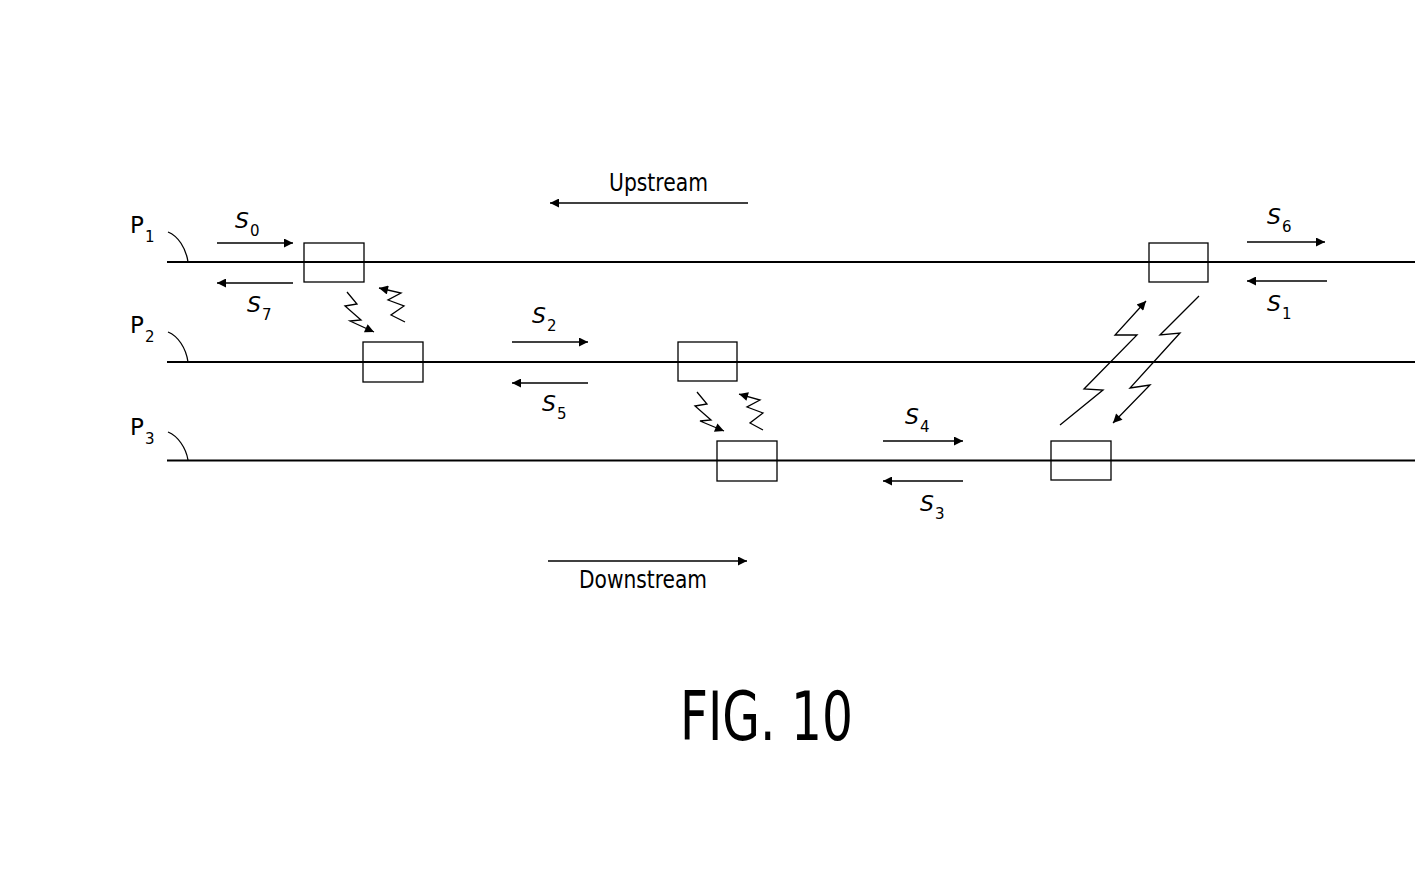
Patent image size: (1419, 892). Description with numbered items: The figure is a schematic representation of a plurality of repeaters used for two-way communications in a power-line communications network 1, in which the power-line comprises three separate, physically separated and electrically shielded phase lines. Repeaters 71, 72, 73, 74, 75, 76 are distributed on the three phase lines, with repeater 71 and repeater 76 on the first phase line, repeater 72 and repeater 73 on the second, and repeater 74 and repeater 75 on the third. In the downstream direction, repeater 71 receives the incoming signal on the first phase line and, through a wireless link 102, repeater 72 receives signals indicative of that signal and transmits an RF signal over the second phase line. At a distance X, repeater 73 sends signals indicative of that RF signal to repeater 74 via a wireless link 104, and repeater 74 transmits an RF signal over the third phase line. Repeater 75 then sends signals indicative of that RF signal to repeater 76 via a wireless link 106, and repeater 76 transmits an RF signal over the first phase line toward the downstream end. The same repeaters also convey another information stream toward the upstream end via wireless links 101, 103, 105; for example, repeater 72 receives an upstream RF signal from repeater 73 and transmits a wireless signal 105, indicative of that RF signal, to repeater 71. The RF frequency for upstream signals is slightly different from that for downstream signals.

The PLC network 1 is at (828, 157).
The repeater 71 is at (336, 243).
The repeater 72 is at (392, 382).
The repeater 73 is at (707, 342).
The repeater 74 is at (747, 481).
The repeater 75 is at (1100, 480).
The repeater 76 is at (1180, 243).
The wireless link 101 is at (1140, 388).
The wireless link 102 is at (352, 310).
The wireless link 103 is at (762, 412).
The wireless link 104 is at (700, 412).
The wireless signal 105 is at (387, 300).
The wireless link 106 is at (1085, 390).